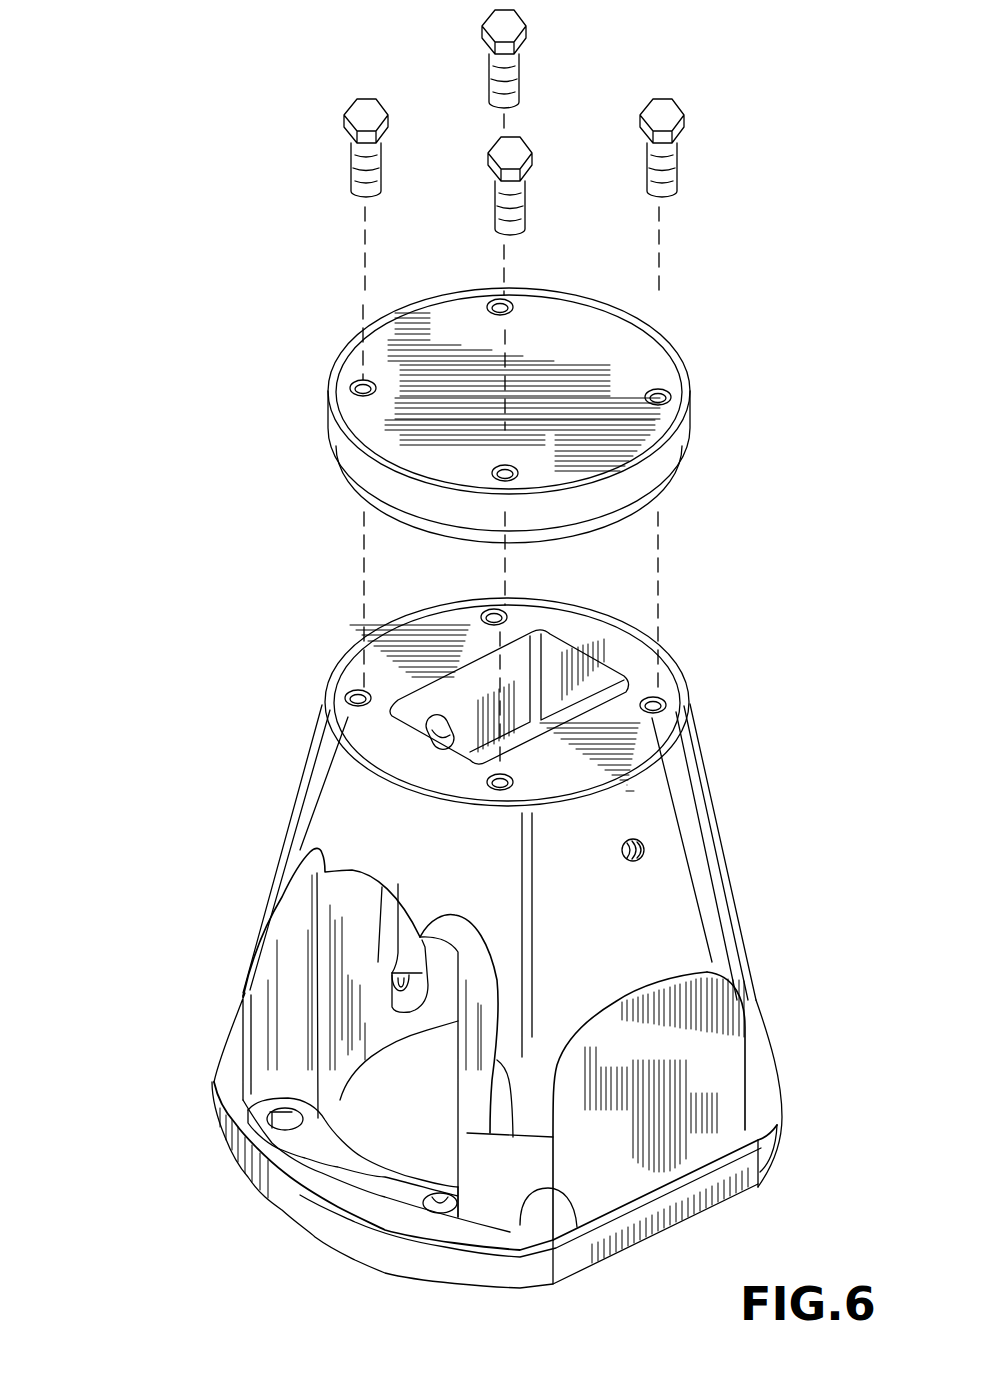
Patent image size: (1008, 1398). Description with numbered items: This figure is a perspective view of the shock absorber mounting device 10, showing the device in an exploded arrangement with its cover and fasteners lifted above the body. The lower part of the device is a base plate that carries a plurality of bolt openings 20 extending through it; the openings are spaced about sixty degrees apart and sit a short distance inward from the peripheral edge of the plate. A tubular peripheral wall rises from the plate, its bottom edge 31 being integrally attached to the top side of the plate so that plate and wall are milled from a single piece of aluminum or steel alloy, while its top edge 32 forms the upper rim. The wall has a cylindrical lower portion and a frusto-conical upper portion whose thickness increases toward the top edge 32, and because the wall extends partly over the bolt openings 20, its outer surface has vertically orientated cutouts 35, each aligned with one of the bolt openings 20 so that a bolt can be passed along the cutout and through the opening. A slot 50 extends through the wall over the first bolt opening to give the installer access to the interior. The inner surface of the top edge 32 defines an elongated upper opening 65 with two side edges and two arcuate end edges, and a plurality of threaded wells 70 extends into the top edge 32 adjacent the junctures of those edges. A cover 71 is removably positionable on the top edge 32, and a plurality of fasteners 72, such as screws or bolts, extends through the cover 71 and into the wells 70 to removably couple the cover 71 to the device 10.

The shock absorber mounting device 10 is at (224, 326).
The bolt openings 20 is at (285, 1120).
The bottom edge 31 is at (577, 1227).
The top edge 32 is at (656, 738).
The cutouts 35 is at (293, 987).
The slot 50 is at (427, 968).
The upper opening 65 is at (580, 668).
The threaded wells 70 is at (342, 696).
The cover 71 is at (690, 414).
The fasteners 72 is at (350, 155).